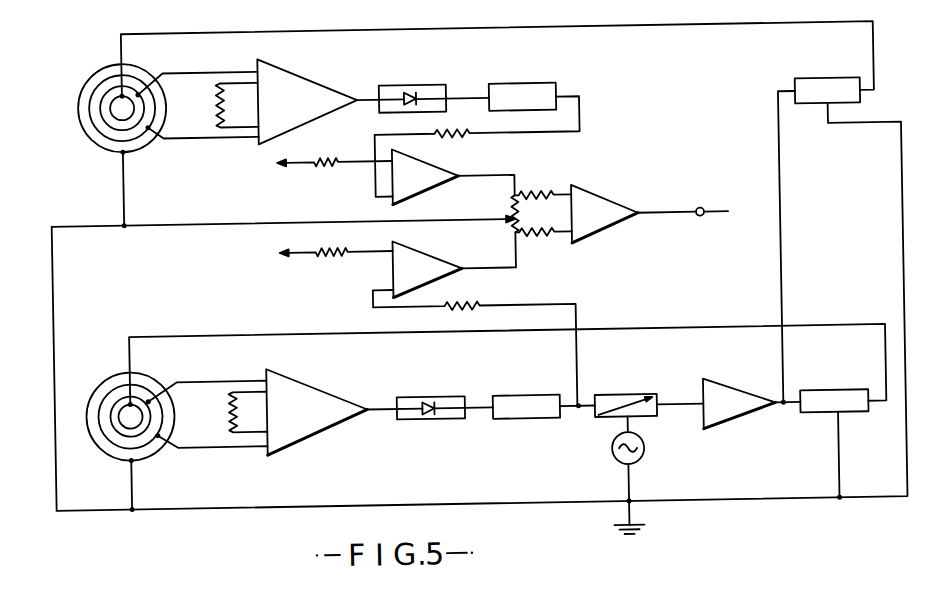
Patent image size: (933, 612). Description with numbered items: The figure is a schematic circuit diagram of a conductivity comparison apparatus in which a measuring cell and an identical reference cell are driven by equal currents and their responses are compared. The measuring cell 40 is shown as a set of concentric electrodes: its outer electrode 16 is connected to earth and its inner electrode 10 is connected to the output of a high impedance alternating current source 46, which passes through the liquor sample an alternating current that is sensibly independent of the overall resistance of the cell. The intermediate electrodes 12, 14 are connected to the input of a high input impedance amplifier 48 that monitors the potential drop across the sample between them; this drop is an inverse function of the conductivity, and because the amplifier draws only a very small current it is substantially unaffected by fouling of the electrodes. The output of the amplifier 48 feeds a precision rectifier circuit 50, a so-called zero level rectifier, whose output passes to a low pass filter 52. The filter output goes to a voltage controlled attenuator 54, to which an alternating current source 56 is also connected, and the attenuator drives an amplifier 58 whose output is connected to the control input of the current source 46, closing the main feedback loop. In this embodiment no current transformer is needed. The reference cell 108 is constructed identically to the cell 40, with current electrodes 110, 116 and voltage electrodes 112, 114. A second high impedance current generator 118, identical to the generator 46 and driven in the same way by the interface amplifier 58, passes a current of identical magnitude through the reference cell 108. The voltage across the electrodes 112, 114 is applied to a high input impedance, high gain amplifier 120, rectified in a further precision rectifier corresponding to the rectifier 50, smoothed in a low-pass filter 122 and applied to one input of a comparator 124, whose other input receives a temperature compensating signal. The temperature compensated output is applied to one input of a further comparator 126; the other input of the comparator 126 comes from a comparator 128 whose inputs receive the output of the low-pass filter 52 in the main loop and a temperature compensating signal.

The inner electrode 10 is at (118, 410).
The intermediate electrode 12 is at (135, 389).
The intermediate electrode 14 is at (148, 396).
The outer electrode 16 is at (104, 446).
The cell 40 is at (128, 410).
The high impedance alternating current source 46 is at (850, 420).
The high input impedance amplifier 48 is at (318, 405).
The precision rectifier circuit 50 is at (434, 418).
The low pass filter 52 is at (534, 419).
The voltage controlled attenuator 54 is at (600, 419).
The alternating current source 56 is at (633, 464).
The amplifier 58 is at (741, 421).
The reference cell 108 is at (100, 109).
The current electrode 110 is at (119, 114).
The voltage electrode 112 is at (105, 110).
The voltage electrode 114 is at (92, 101).
The current electrode 116 is at (84, 87).
The second high impedance current generator 118 is at (861, 109).
The high input impedance, high gain amplifier 120 is at (311, 105).
The low-pass filter 122 is at (553, 84).
The comparator 124 is at (434, 187).
The further comparator 126 is at (611, 232).
The comparator 128 is at (433, 281).